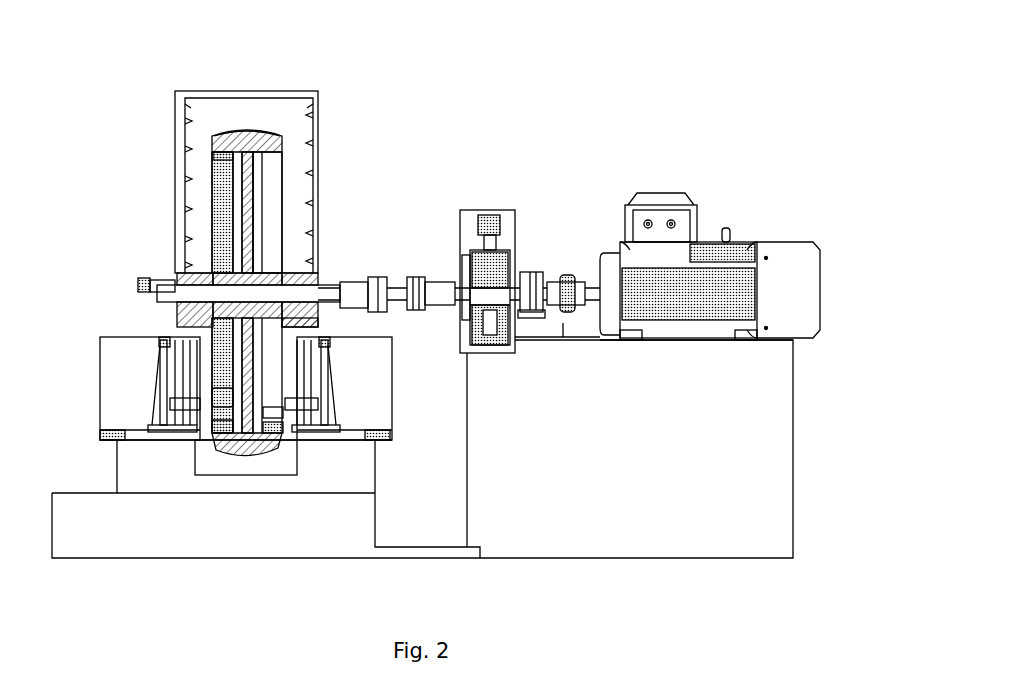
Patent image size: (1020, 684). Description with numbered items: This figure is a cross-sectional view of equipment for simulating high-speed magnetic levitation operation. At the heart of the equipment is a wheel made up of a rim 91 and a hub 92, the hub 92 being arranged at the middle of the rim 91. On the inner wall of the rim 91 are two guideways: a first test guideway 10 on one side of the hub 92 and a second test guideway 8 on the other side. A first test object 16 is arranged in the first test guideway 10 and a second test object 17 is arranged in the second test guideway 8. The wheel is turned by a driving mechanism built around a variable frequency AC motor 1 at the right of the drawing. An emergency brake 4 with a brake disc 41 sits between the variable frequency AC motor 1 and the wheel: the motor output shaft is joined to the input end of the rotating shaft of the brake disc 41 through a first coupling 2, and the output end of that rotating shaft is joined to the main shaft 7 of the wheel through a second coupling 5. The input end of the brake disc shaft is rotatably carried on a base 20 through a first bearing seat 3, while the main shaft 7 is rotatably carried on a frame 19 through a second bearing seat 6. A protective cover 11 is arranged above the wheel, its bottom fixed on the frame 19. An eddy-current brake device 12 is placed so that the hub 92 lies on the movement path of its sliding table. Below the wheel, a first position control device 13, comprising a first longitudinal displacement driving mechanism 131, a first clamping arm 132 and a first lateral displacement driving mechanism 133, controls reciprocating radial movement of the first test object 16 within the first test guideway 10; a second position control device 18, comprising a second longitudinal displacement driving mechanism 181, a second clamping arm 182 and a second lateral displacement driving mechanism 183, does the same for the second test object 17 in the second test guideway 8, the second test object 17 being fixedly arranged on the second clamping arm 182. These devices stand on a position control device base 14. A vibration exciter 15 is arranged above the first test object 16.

The variable frequency AC motor 1 is at (723, 247).
The first coupling 2 is at (574, 275).
The first bearing seat 3 is at (533, 272).
The emergency brake 4 is at (503, 210).
The brake disc 41 is at (510, 280).
The second coupling 5 is at (397, 283).
The second bearing seat 6 is at (311, 250).
The main shaft 7 is at (273, 283).
The second test guideway 8 is at (272, 207).
The rim 91 is at (248, 147).
The hub 92 is at (245, 165).
The first test guideway 10 is at (222, 172).
The protective cover 11 is at (173, 143).
The eddy-current brake device 12 is at (150, 278).
The first position control device 13 is at (100, 417).
The first longitudinal displacement driving mechanism 131 is at (165, 348).
The first clamping arm 132 is at (178, 398).
The first lateral displacement driving mechanism 133 is at (147, 430).
The position control device base 14 is at (130, 463).
The vibration exciter 15 is at (217, 403).
The first test object 16 is at (218, 432).
The second test object 17 is at (270, 430).
The second position control device 18 is at (395, 422).
The second longitudinal displacement driving mechanism 181 is at (318, 393).
The second clamping arm 182 is at (307, 402).
The second lateral displacement driving mechanism 183 is at (352, 440).
The frame 19 is at (317, 320).
The base 20 is at (667, 428).